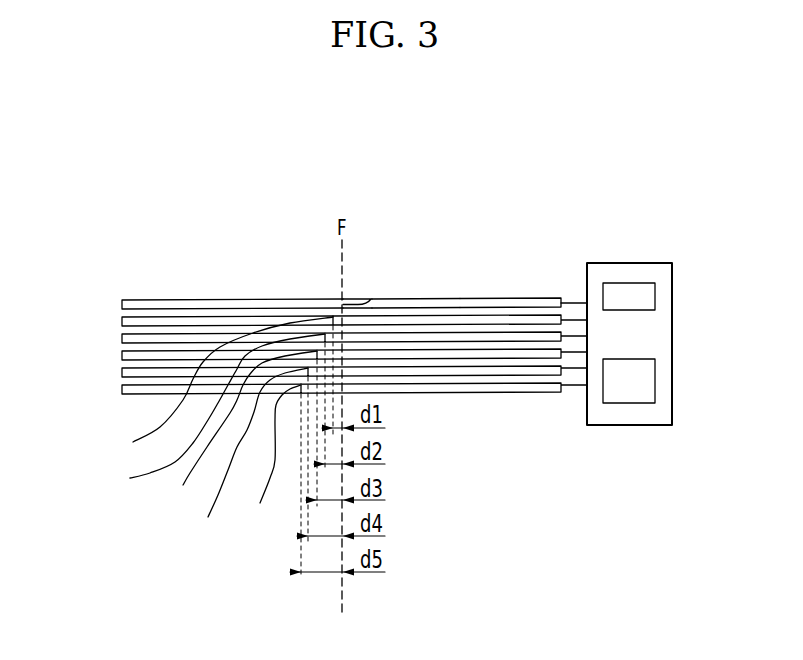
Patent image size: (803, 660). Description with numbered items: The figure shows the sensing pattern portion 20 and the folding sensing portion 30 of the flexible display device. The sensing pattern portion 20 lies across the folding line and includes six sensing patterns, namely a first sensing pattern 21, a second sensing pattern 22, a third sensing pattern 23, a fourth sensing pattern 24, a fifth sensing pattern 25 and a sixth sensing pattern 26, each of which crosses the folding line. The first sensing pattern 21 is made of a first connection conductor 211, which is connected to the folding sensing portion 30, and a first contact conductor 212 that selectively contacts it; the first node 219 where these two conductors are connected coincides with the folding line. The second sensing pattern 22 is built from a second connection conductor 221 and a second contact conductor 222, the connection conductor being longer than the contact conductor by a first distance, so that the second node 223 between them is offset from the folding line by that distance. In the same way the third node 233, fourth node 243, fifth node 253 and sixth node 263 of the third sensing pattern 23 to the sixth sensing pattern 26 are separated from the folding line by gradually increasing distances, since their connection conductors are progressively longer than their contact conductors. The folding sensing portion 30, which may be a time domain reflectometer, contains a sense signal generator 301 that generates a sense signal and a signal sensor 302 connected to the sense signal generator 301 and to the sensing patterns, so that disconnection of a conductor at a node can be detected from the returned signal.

The sensing pattern portion 20 is at (172, 277).
The first sensing pattern 21 is at (121, 299).
The second sensing pattern 22 is at (120, 320).
The third sensing pattern 23 is at (120, 337).
The fourth sensing pattern 24 is at (120, 353).
The fifth sensing pattern 25 is at (120, 372).
The sixth sensing pattern 26 is at (120, 390).
The first connection conductor 211 is at (500, 303).
The first contact conductor 212 is at (210, 303).
The first node 219 is at (368, 298).
The second connection conductor 221 is at (420, 308).
The second contact conductor 222 is at (267, 322).
The second node 223 is at (215, 387).
The third node 233 is at (209, 415).
The fourth node 243 is at (233, 433).
The fifth node 253 is at (247, 457).
The sixth node 263 is at (269, 459).
The folding sensing portion 30 is at (627, 263).
The sense signal generator 301 is at (655, 293).
The signal sensor 302 is at (655, 378).